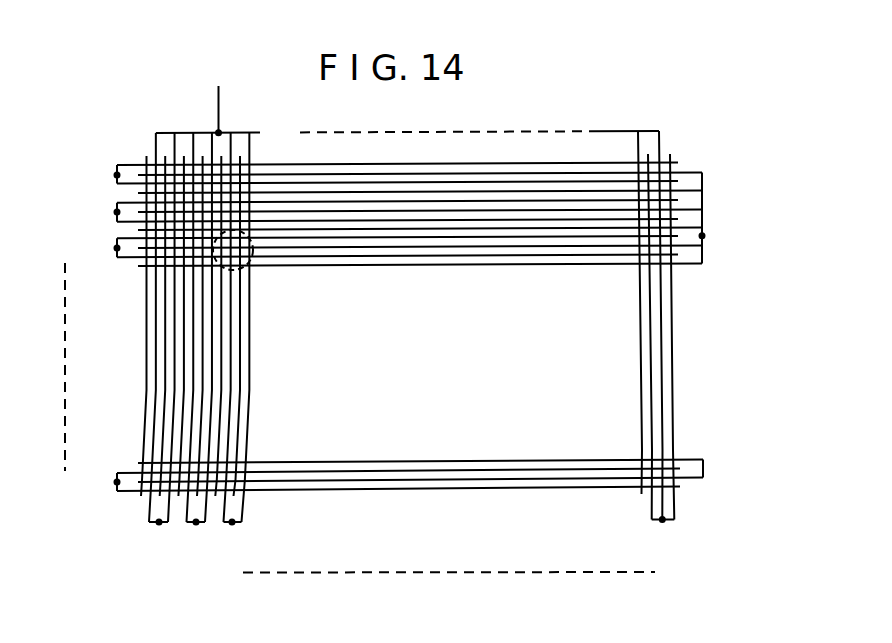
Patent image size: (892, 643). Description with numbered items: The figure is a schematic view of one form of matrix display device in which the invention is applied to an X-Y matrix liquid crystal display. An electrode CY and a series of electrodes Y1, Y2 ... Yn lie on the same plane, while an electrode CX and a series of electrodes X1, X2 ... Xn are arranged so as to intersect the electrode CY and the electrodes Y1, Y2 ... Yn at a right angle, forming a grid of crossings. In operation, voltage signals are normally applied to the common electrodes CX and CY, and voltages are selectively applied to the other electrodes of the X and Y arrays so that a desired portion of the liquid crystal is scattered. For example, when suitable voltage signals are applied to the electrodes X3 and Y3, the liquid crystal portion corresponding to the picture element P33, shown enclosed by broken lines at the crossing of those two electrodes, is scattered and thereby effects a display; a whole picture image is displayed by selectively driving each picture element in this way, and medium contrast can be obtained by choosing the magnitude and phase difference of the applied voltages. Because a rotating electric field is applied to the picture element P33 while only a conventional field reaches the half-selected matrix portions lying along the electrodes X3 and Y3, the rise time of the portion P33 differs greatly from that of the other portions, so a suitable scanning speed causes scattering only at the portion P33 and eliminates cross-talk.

The electrode X1 is at (117, 175).
The electrode X2 is at (117, 212).
The electrode X3 is at (117, 248).
The electrode Xn is at (117, 482).
The electrode Y1 is at (159, 522).
The electrode Y2 is at (196, 522).
The electrode Y3 is at (232, 522).
The electrode Yn is at (662, 520).
The electrode Cx is at (702, 236).
The electrode Cy is at (407, 94).
The picture element P33 is at (254, 268).